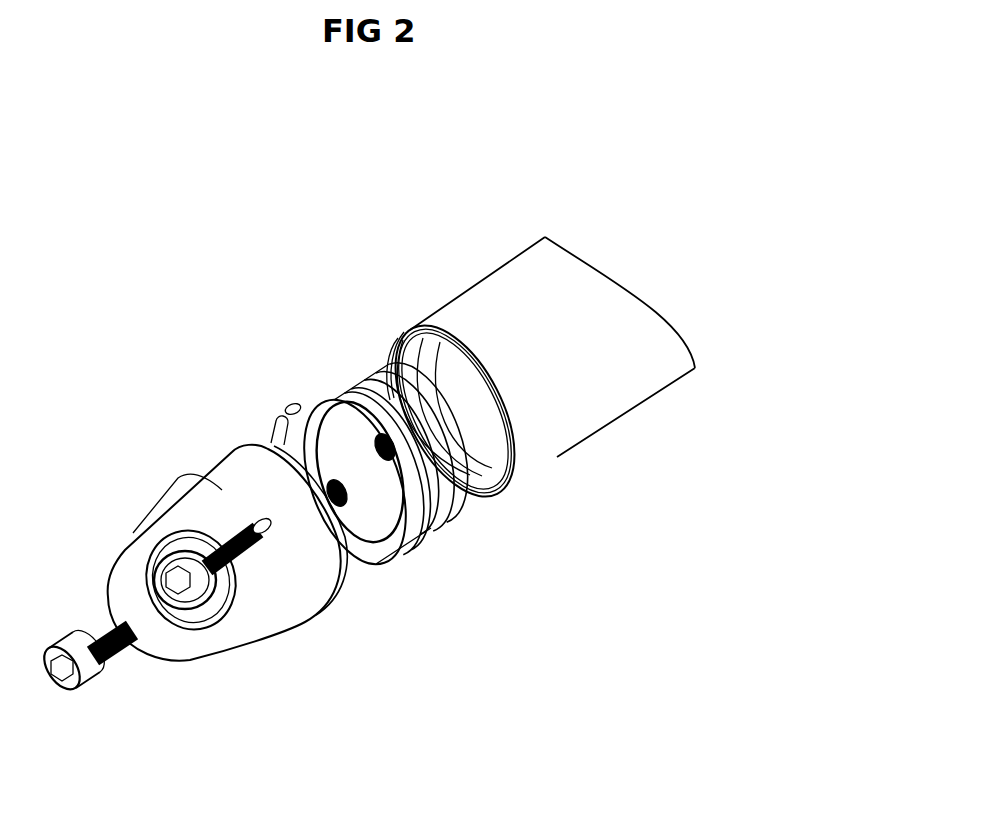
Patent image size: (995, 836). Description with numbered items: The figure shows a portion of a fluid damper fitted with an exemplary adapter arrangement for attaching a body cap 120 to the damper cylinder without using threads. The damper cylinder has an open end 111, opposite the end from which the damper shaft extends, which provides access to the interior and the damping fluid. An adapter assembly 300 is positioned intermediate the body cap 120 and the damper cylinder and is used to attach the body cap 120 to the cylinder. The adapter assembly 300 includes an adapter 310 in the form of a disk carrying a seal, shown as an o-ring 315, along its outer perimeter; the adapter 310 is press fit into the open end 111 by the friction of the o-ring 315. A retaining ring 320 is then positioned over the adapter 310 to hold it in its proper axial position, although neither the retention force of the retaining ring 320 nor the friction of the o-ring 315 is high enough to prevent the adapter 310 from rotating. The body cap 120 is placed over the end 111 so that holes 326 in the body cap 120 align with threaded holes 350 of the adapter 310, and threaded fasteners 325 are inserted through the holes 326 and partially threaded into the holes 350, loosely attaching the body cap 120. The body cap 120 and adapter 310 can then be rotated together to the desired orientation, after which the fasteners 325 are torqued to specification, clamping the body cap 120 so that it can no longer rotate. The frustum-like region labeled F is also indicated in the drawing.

The end 111 is at (378, 352).
The body cap 120 is at (313, 593).
The adapter assembly 300 is at (493, 513).
The adapter 310 is at (480, 493).
The o-ring 315 is at (333, 386).
The retaining ring 320 is at (296, 406).
The threaded fasteners 325 is at (220, 623).
The holes 326 is at (247, 518).
The threaded holes 350 is at (337, 490).
The field of view frustum F is at (512, 460).